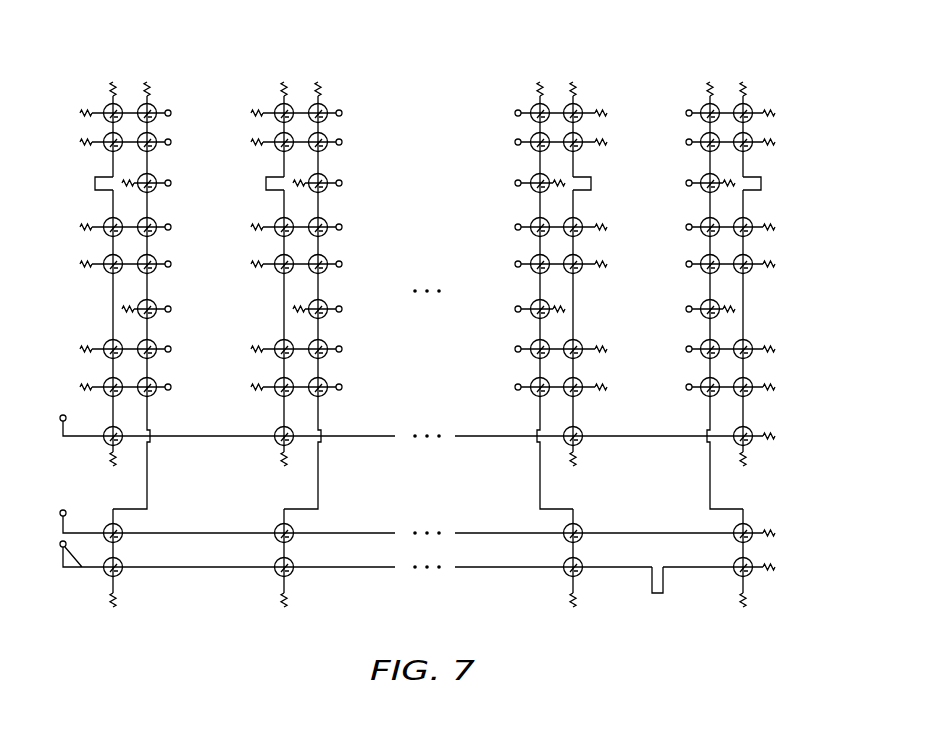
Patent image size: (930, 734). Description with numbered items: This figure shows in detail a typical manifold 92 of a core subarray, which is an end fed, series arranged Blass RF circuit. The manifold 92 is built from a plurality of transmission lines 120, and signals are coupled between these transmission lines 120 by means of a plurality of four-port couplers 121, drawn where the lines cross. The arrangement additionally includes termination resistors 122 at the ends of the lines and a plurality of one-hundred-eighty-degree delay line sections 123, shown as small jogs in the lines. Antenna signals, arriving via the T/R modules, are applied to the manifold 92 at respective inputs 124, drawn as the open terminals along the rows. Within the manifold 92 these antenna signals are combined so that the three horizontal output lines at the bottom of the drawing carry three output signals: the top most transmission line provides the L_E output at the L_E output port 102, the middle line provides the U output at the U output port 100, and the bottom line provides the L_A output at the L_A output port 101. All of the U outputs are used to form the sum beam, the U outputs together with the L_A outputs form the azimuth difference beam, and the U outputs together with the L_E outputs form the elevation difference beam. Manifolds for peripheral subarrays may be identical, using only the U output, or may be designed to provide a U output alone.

The manifold 92 is at (472, 70).
The U output port 100 is at (65, 510).
The L_A output port 101 is at (82, 568).
The L_E output port 102 is at (63, 413).
The transmission line 120 is at (280, 233).
The four-port coupler 121 is at (158, 146).
The termination resistor 122 is at (116, 600).
The 180° delay line section 123 is at (94, 183).
The input 124 is at (168, 178).